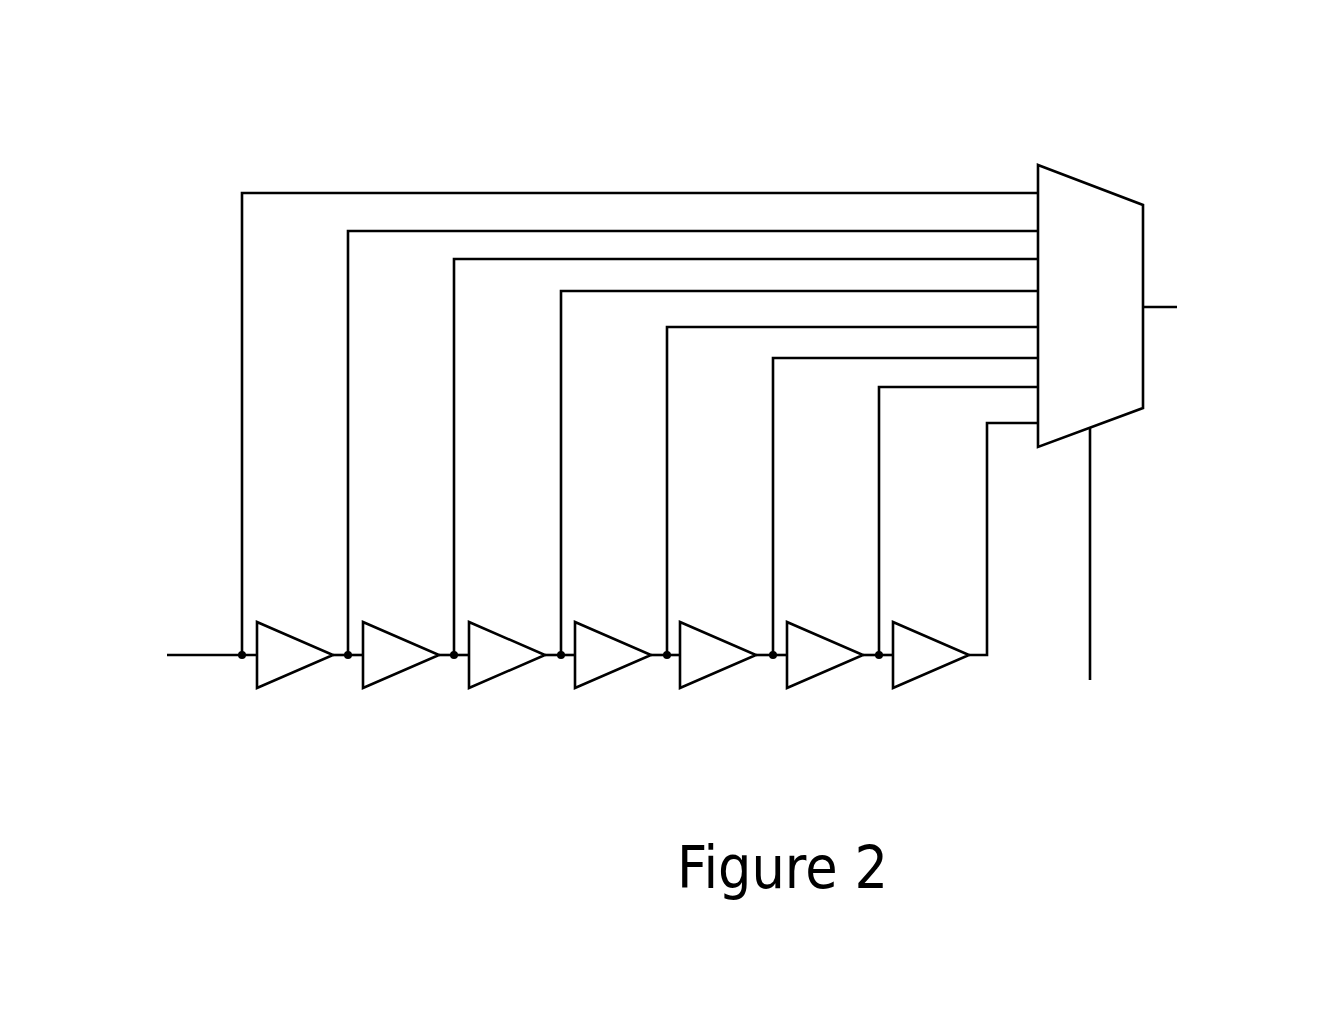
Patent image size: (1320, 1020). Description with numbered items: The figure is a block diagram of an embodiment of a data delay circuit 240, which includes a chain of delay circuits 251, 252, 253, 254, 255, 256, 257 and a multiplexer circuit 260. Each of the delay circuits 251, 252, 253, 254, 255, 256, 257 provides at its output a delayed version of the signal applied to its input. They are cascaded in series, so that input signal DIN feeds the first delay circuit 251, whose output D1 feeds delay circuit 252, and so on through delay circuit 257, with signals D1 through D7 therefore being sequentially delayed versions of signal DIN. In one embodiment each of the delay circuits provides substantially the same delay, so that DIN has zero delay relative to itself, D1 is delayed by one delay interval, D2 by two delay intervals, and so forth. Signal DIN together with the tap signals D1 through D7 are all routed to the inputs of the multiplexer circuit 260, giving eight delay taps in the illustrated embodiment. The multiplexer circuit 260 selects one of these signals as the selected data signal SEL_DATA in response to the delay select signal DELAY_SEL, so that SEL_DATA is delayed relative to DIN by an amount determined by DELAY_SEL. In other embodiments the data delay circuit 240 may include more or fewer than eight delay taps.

The data delay circuit 240 is at (742, 61).
The delay circuit 251 is at (300, 667).
The delay circuit 252 is at (406, 667).
The delay circuit 253 is at (512, 667).
The delay circuit 254 is at (618, 667).
The delay circuit 255 is at (723, 667).
The delay circuit 256 is at (830, 667).
The delay circuit 257 is at (936, 667).
The multiplexer circuit 260 is at (1107, 318).